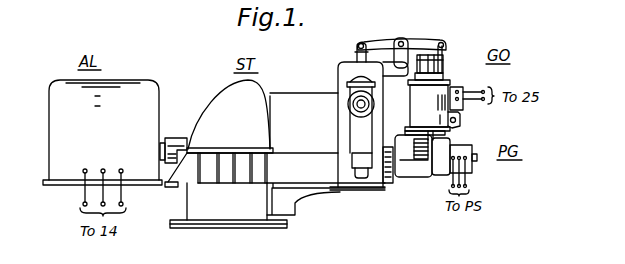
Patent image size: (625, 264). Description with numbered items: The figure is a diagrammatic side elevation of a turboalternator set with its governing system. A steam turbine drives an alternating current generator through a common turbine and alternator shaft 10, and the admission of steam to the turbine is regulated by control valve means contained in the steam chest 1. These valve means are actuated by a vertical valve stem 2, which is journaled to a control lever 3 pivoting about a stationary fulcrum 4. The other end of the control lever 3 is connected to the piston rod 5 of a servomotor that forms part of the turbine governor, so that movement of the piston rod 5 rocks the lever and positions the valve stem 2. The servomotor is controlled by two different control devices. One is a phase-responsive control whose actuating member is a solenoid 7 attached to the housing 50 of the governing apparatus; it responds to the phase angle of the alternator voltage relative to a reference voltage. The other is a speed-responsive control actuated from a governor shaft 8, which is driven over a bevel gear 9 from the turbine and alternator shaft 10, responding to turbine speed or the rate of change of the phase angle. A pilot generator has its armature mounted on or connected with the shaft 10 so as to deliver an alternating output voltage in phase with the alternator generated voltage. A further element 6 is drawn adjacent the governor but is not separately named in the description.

The steam chest 1 is at (338, 70).
The vertical valve stem 2 is at (357, 54).
The control lever 3 is at (370, 42).
The stationary fulcrum 4 is at (401, 40).
The piston rod 5 is at (442, 70).
The governor rod 6 is at (440, 46).
The solenoid 7 is at (462, 108).
The governor shaft 8 is at (446, 137).
The bevel gear 9 is at (426, 168).
The turbine and alternator shaft 10 is at (429, 172).
The housing 50 is at (411, 97).